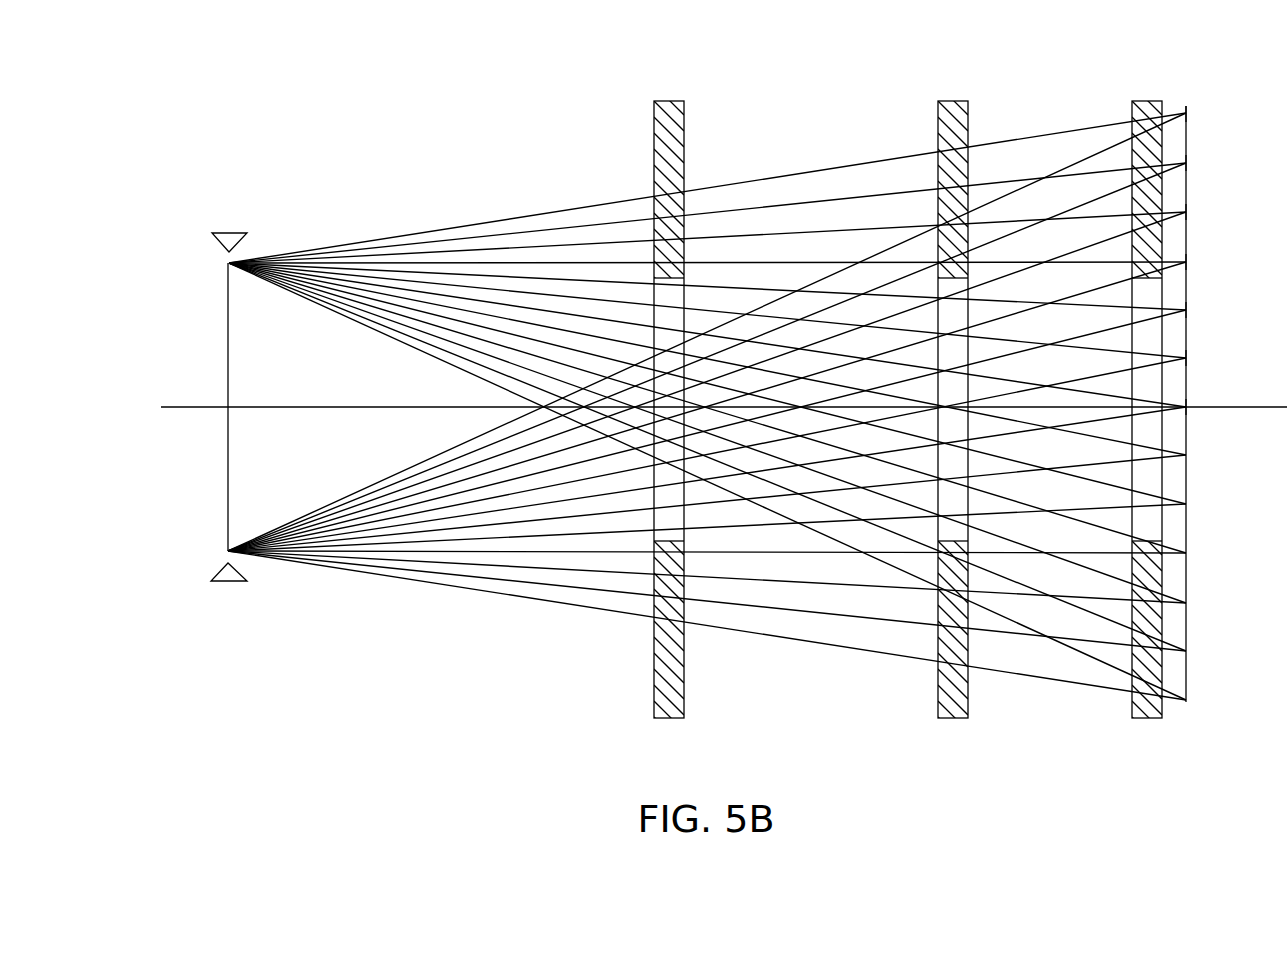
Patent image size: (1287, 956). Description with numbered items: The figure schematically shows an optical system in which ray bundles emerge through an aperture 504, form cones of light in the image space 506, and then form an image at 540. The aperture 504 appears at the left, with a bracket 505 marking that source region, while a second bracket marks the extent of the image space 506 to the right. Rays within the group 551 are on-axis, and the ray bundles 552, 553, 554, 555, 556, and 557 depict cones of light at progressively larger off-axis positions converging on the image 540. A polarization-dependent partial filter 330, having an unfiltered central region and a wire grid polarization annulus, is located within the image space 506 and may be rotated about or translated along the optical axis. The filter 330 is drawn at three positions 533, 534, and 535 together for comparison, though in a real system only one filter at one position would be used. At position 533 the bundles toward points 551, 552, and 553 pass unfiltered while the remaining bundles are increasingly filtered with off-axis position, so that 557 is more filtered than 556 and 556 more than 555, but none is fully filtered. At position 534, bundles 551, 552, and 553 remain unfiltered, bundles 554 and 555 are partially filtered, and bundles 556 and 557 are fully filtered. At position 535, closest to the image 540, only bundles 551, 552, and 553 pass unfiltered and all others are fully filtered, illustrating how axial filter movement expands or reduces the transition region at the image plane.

The aperture 504 is at (229, 230).
The source array 505 is at (643, 406).
The image space 506 is at (898, 405).
The polarization-dependent partial filter 330 is at (654, 85).
The first filter position 533 is at (644, 391).
The second filter position 534 is at (938, 85).
The third filter position 535 is at (1132, 85).
The image 540 is at (1187, 477).
The on-axis ray bundle group 551 is at (1180, 410).
The ray bundle 552 is at (1178, 355).
The ray bundle 553 is at (1177, 306).
The ray bundle 554 is at (1177, 259).
The ray bundle 555 is at (1177, 209).
The ray bundle 556 is at (1177, 161).
The ray bundle 557 is at (1177, 112).